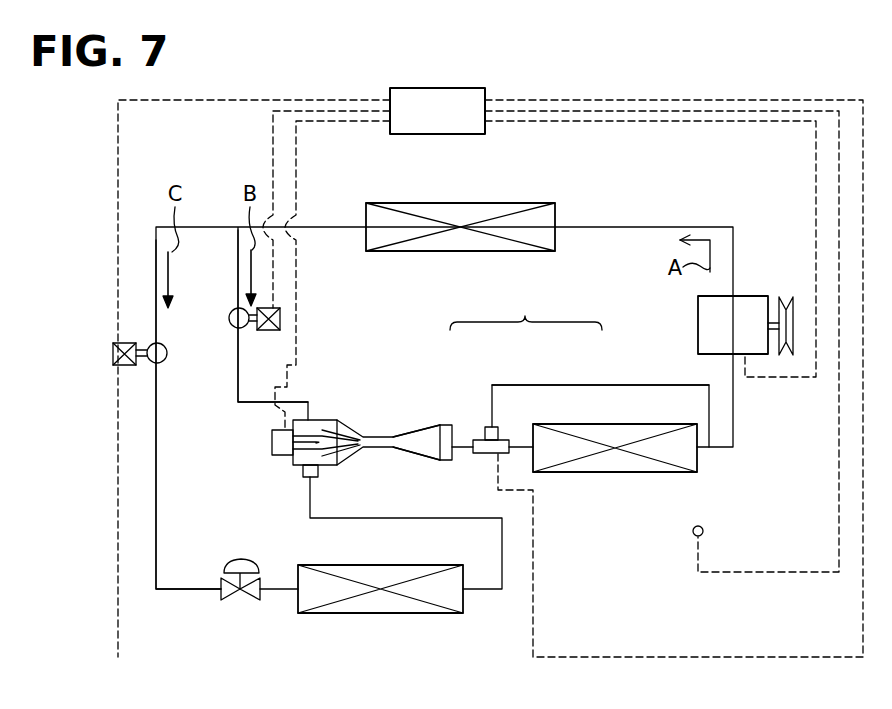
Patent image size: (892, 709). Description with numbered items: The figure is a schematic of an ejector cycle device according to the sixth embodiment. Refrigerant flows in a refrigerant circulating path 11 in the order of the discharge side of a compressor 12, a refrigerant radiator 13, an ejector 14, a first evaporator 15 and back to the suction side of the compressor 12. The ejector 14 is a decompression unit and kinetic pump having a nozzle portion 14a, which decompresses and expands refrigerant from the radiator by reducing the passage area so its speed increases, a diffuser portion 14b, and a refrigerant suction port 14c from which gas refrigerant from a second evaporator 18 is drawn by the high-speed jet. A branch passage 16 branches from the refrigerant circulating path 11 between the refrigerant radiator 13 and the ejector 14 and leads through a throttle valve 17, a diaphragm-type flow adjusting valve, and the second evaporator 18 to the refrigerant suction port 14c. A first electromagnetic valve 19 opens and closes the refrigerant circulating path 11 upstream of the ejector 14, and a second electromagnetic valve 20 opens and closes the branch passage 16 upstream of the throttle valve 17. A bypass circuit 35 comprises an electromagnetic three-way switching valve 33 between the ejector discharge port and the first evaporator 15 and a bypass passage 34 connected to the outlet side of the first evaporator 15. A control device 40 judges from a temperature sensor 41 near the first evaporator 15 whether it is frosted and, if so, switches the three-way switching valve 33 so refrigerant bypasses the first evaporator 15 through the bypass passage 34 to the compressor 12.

The control device 40 is at (448, 88).
The refrigerant radiator 13 is at (450, 203).
The compressor 12 is at (743, 296).
The bypass circuit 35 is at (526, 310).
The electromagnetic three-way switching valve 33 is at (483, 428).
The bypass passage 34 is at (588, 385).
The first evaporator 15 is at (585, 472).
The temperature sensor 41 is at (703, 528).
The ejector 14 is at (370, 440).
The nozzle portion 14a is at (332, 437).
The diffuser portion 14b is at (420, 458).
The refrigerant suction port 14c is at (320, 473).
The throttle valve 17 is at (235, 600).
The second evaporator 18 is at (386, 613).
The second electromagnetic valve 20 is at (113, 349).
The first electromagnetic valve 19 is at (262, 331).
The refrigerant circulating path 11 is at (238, 376).
The branch passage 16 is at (156, 410).